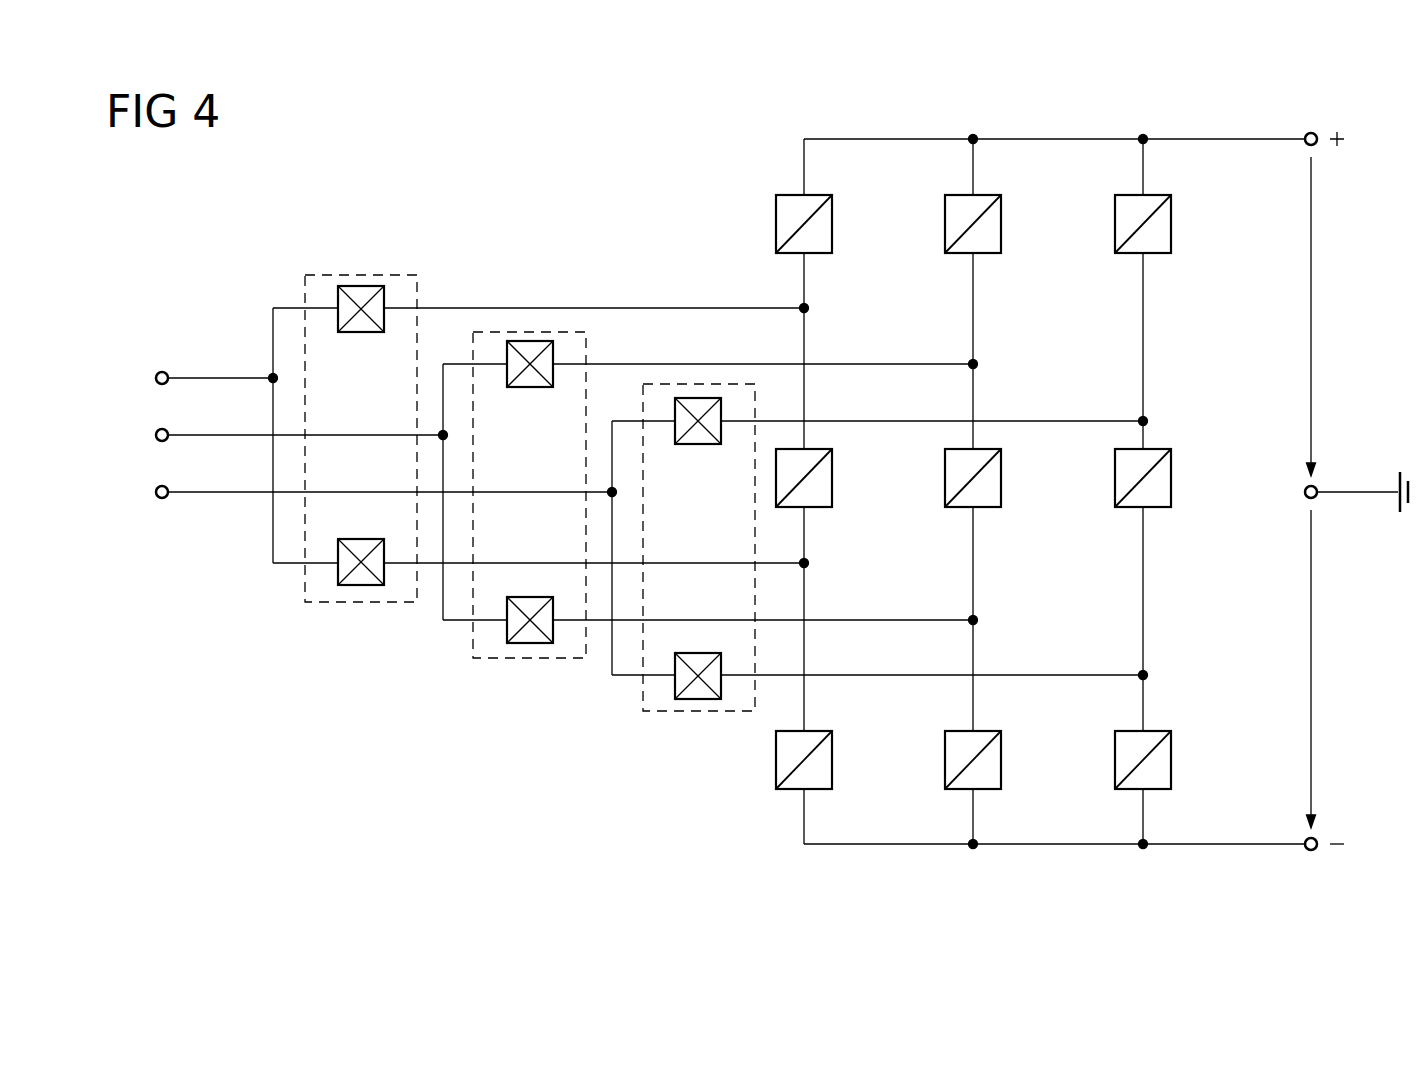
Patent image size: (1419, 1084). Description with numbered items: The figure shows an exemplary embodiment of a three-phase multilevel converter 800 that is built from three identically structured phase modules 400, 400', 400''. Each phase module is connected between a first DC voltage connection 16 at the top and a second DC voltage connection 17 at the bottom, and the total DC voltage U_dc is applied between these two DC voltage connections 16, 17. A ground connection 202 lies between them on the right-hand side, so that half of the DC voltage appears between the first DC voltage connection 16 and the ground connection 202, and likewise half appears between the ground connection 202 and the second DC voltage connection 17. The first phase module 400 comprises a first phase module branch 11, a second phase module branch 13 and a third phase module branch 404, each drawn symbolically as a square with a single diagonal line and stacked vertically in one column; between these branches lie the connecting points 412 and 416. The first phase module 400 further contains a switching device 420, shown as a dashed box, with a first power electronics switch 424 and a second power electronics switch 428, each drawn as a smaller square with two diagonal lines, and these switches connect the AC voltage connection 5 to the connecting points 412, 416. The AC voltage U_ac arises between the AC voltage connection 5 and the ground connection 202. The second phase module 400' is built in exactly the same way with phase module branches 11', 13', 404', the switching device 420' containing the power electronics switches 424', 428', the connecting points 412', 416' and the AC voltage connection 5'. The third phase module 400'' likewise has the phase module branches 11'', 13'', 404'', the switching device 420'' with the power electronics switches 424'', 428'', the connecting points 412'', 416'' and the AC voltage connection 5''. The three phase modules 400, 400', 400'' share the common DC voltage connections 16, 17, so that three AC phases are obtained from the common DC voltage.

The three-phase multilevel converter 800 is at (216, 229).
The AC voltage connection 5 is at (183, 379).
The AC voltage connection 5' is at (268, 436).
The AC voltage connection 5'' is at (352, 493).
The switching device 420 is at (361, 420).
The switching device 420' is at (529, 467).
The switching device 420'' is at (699, 519).
The first power electronics switch 424 is at (363, 348).
The power electronics switch 424' is at (535, 404).
The power electronics switch 424'' is at (707, 460).
The second power electronics switch 428 is at (363, 602).
The power electronics switch 428' is at (535, 660).
The power electronics switch 428'' is at (707, 715).
The first phase module 400 is at (852, 537).
The second phase module 400' is at (1024, 536).
The third phase module 400'' is at (1197, 536).
The first phase module branch 11 is at (843, 224).
The first phase module branch 11' is at (1016, 224).
The first phase module branch 11'' is at (1188, 224).
The third phase module branch 404 is at (852, 478).
The third phase module branch 404' is at (1024, 478).
The third phase module branch 404'' is at (1197, 478).
The second phase module branch 13 is at (843, 760).
The second phase module branch 13' is at (1016, 760).
The second phase module branch 13'' is at (1188, 760).
The connecting point 412 is at (851, 308).
The connecting point 412' is at (1024, 364).
The connecting point 412'' is at (1197, 421).
The connecting point 416 is at (851, 564).
The connecting point 416' is at (1024, 620).
The connecting point 416'' is at (1197, 676).
The first DC voltage connection 16 is at (1311, 131).
The second DC voltage connection 17 is at (1311, 851).
The ground connection 202 is at (1316, 497).